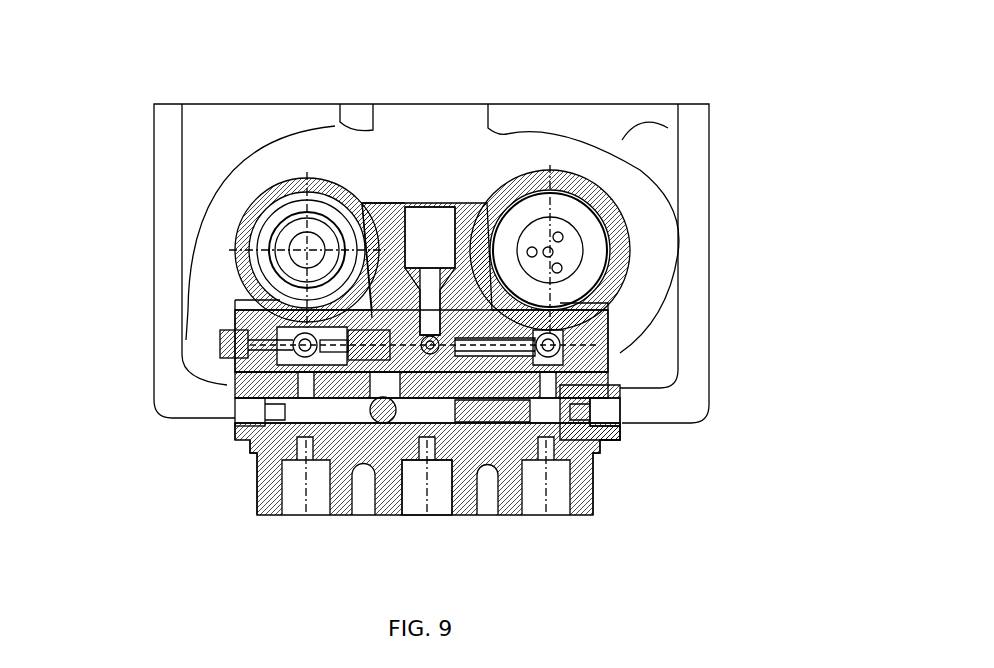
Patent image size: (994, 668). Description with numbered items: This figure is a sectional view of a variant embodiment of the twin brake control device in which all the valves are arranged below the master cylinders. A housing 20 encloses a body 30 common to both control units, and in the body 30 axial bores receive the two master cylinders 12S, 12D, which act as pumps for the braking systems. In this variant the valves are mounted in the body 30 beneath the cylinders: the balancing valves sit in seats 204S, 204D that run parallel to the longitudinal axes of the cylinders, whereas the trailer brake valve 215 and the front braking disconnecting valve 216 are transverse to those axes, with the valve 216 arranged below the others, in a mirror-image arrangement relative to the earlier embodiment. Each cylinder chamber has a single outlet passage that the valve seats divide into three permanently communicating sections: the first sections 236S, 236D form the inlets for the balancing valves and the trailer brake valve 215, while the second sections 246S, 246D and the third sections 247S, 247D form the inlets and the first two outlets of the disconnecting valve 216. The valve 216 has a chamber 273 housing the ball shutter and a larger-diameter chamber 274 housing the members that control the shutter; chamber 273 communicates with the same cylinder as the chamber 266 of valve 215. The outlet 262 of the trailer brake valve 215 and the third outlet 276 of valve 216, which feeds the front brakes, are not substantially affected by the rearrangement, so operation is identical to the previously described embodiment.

The housing 20 is at (233, 120).
The master cylinder 12D is at (303, 245).
The master cylinder 12S is at (583, 223).
The trailer brake valve 215 is at (372, 320).
The outlet 262 is at (445, 235).
The first section of outlet passage 236D is at (222, 327).
The first section of outlet passage 236S is at (575, 322).
The valve seat 204D is at (293, 350).
The valve seat 204S is at (560, 327).
The body 30 is at (607, 348).
The second section of outlet passage 246D is at (237, 428).
The second section of outlet passage 246S is at (620, 388).
The chamber 274 is at (623, 437).
The third section of outlet passage 247D is at (258, 487).
The third section of outlet passage 247S is at (593, 462).
The chamber 273 is at (332, 347).
The chamber 266 is at (357, 350).
The third outlet 276 is at (437, 500).
The front braking disconnecting valve 216 is at (505, 517).